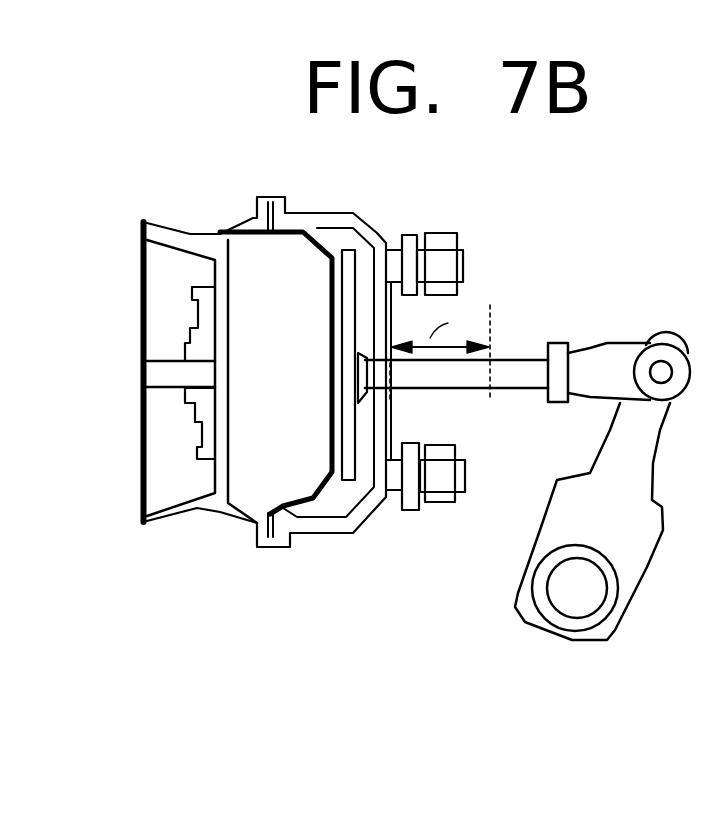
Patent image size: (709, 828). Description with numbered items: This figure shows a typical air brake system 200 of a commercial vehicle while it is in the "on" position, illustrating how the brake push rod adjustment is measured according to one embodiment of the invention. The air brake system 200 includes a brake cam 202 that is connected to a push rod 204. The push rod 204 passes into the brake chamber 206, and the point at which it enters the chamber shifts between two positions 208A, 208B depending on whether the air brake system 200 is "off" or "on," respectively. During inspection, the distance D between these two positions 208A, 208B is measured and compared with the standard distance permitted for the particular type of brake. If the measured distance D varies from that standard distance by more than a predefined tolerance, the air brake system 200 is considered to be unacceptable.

The air brake system 200 is at (312, 628).
The brake cam 202 is at (640, 531).
The push rod 204 is at (532, 373).
The brake chamber 206 is at (307, 320).
The position 208A is at (497, 345).
The position 208B is at (400, 373).